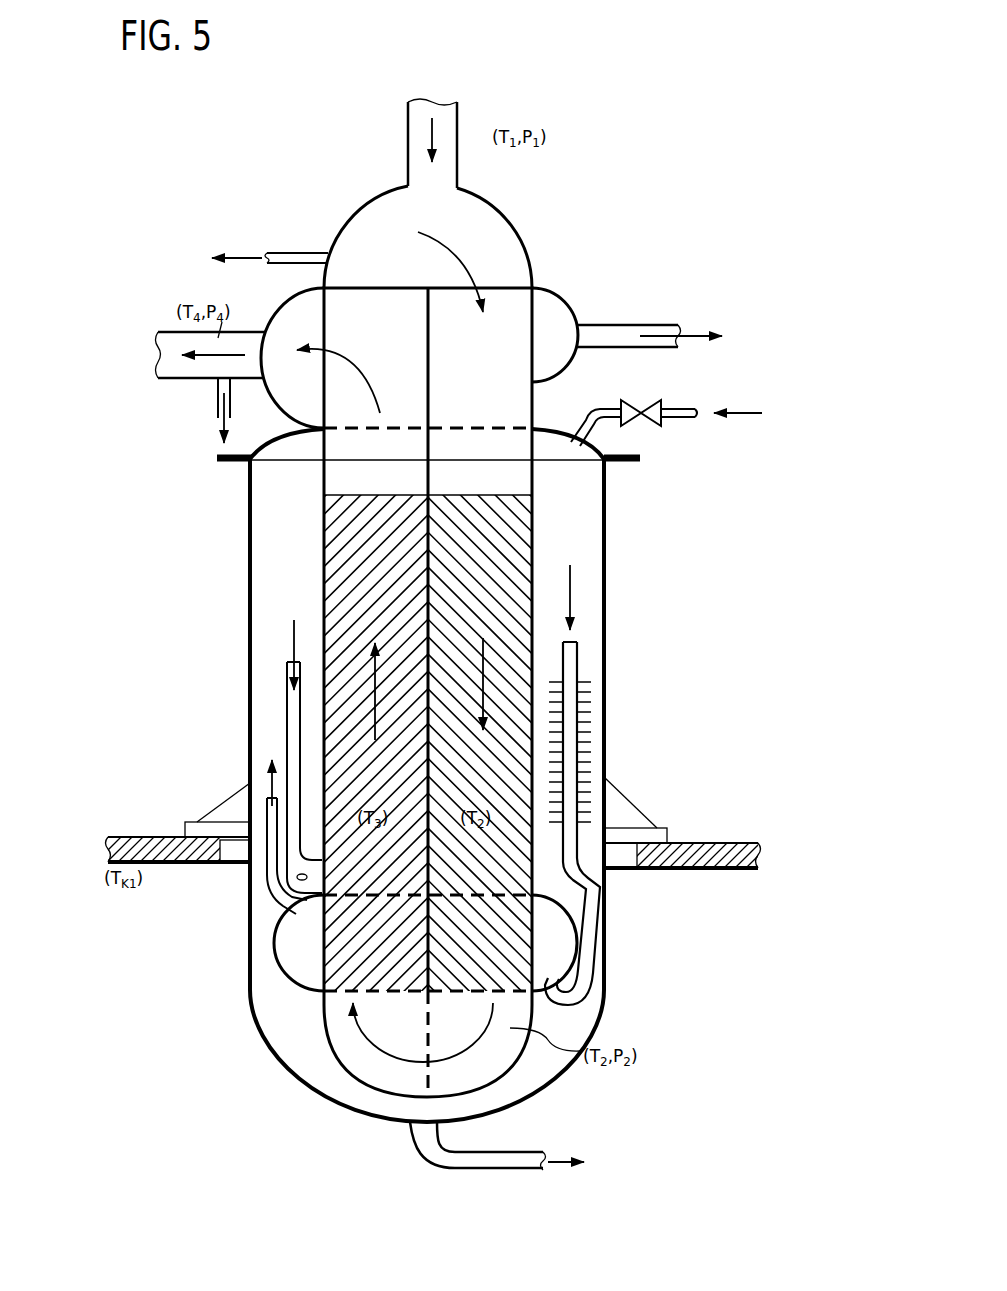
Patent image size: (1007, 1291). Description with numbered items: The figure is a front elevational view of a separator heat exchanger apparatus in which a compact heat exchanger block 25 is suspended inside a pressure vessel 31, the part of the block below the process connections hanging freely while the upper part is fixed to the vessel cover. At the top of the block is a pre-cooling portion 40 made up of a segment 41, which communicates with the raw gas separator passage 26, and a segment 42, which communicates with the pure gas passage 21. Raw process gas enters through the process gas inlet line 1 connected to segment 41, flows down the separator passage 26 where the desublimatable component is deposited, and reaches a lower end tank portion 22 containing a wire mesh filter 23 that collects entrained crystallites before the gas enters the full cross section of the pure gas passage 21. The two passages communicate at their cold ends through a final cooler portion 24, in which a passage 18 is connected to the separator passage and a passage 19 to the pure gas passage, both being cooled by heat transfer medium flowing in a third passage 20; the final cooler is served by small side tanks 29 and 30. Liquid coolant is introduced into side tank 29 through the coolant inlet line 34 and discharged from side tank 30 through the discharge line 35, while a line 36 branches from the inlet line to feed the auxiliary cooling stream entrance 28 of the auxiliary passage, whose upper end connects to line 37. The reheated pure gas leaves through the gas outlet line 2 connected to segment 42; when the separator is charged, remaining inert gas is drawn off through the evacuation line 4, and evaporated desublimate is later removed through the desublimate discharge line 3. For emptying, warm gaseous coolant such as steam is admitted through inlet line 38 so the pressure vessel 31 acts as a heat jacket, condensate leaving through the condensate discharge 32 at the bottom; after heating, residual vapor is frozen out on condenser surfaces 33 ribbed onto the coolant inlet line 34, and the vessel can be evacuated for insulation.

The process gas inlet line 1 is at (448, 143).
The gas outlet line 2 is at (205, 358).
The desublimate discharge line 3 is at (289, 258).
The evacuation line 4 is at (215, 398).
The passage 18 is at (288, 910).
The passage 19 is at (348, 930).
The third passage 20 is at (380, 978).
The pure gas passage 21 is at (345, 548).
The lower end tank portion 22 is at (353, 1052).
The filter 23 is at (428, 1022).
The final cooler portion 24 is at (336, 936).
The heat exchanger block 25 is at (345, 741).
The raw gas separator passage 26 is at (452, 527).
The auxiliary cooling stream entrance 28 is at (298, 878).
The side tank 29 is at (566, 943).
The side tank 30 is at (297, 980).
The pressure vessel 31 is at (604, 568).
The condensate discharge 32 is at (490, 1157).
The condenser surfaces 33 is at (587, 722).
The coolant inlet line 34 is at (578, 650).
The discharge line 35 is at (267, 787).
The line 36 is at (290, 658).
The line 37 is at (628, 331).
The inlet line 38 is at (678, 412).
The pre-cooling portion 40 is at (475, 482).
The segment 41 is at (387, 443).
The segment 42 is at (482, 478).